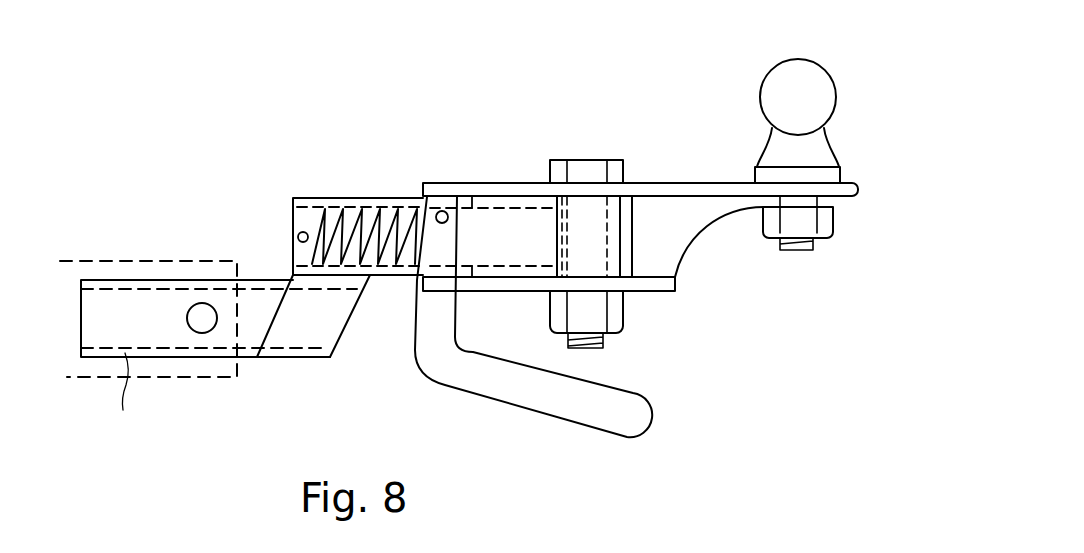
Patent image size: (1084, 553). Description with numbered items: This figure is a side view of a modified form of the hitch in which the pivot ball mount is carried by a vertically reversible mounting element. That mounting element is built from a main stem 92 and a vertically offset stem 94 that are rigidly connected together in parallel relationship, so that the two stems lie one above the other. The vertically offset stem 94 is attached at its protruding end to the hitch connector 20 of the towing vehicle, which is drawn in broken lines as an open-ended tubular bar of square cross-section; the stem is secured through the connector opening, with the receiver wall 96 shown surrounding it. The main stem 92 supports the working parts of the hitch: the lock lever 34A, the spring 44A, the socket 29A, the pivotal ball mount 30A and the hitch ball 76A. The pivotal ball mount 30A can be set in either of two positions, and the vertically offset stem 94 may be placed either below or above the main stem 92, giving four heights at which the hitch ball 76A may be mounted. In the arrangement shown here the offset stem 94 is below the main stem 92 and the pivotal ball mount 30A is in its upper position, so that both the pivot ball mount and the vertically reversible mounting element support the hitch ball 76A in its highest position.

The hitch connector 20 is at (142, 250).
The vertically offset stem 94 is at (185, 282).
The receiver tube wall 96 is at (127, 403).
The main stem 92 is at (358, 198).
The spring 44A is at (387, 272).
The pivotal ball mount 30A is at (712, 157).
The socket 29A is at (632, 257).
The lock lever 34A is at (567, 413).
The hitch ball 76A is at (825, 102).